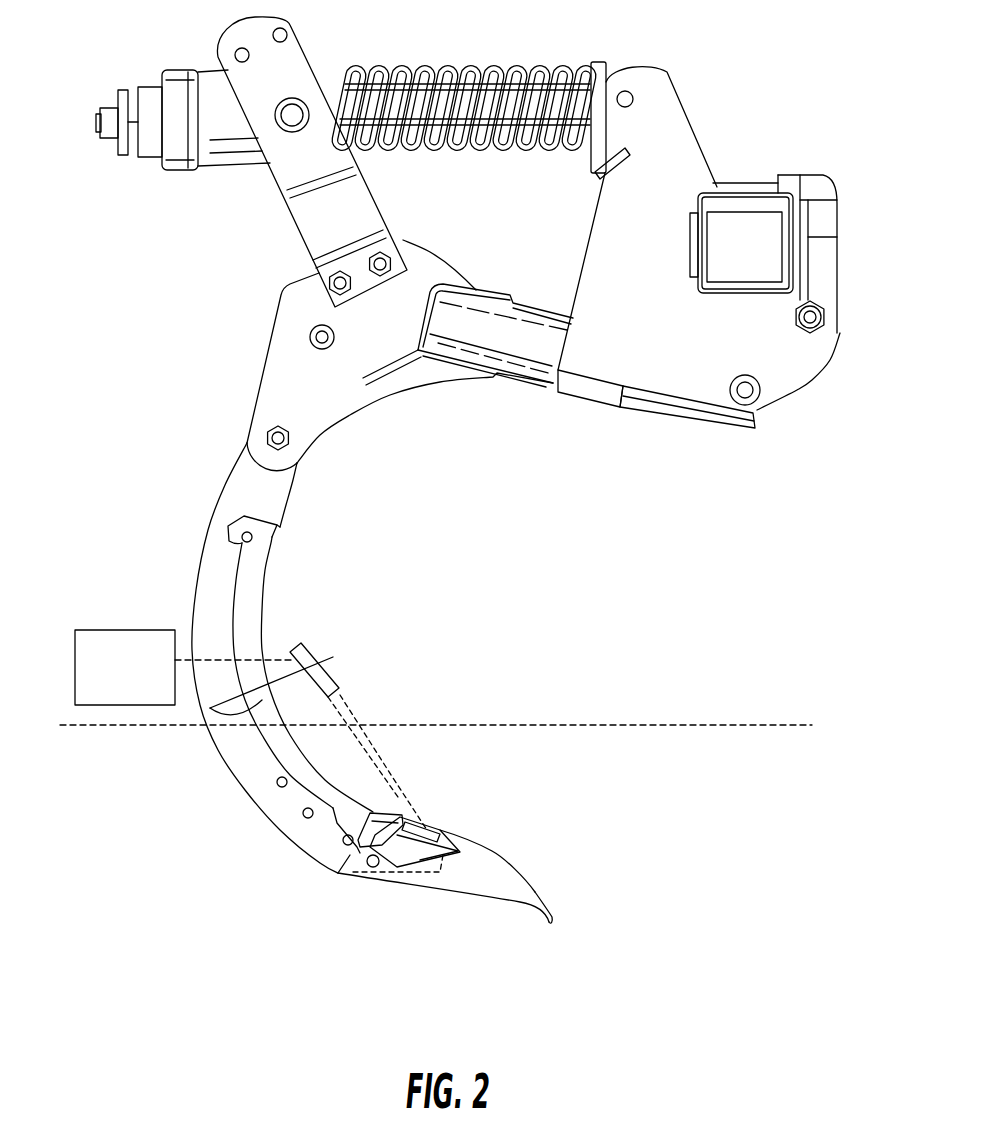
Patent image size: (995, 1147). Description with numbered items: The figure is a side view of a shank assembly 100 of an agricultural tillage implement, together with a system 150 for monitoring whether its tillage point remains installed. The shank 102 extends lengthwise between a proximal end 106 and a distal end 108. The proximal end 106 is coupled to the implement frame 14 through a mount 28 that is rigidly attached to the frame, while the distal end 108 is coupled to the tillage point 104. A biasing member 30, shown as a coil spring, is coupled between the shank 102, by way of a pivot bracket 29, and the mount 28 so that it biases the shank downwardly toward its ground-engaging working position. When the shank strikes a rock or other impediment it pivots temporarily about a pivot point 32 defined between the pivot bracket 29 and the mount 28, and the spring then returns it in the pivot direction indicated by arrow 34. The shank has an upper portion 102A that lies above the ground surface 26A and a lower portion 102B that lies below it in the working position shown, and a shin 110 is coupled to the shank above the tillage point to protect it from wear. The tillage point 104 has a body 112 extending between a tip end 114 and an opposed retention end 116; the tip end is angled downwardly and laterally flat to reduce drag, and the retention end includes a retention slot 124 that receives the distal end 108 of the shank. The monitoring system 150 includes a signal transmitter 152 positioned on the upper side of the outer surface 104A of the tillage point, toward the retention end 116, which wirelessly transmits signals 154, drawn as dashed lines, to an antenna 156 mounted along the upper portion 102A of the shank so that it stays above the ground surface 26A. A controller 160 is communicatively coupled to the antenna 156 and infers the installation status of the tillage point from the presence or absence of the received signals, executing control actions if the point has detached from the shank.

The shank assembly 100 is at (110, 409).
The biasing member 30 is at (500, 66).
The implement frame 14 is at (748, 205).
The mount 28 is at (607, 362).
The pivot point 32 is at (741, 392).
The pivot direction arrow 34 is at (719, 394).
The proximal end 106 is at (275, 373).
The pivot bracket 29 is at (352, 402).
The shank 102 is at (208, 609).
The upper portion 102A is at (212, 538).
The lower portion 102B is at (257, 790).
The shin 110 is at (258, 597).
The system for monitoring installation status 150 is at (337, 627).
The antenna 156 is at (335, 672).
The wireless signals 154 is at (345, 707).
The controller 160 is at (140, 683).
The ground surface 26A is at (630, 725).
The retention end 116 is at (378, 813).
The signal transmitter 152 is at (430, 825).
The body 112 is at (445, 865).
The tillage point 104 is at (403, 890).
The outer surface 104A is at (492, 850).
The tip end 114 is at (551, 918).
The distal end 108 is at (332, 868).
The retention slot 124 is at (367, 887).